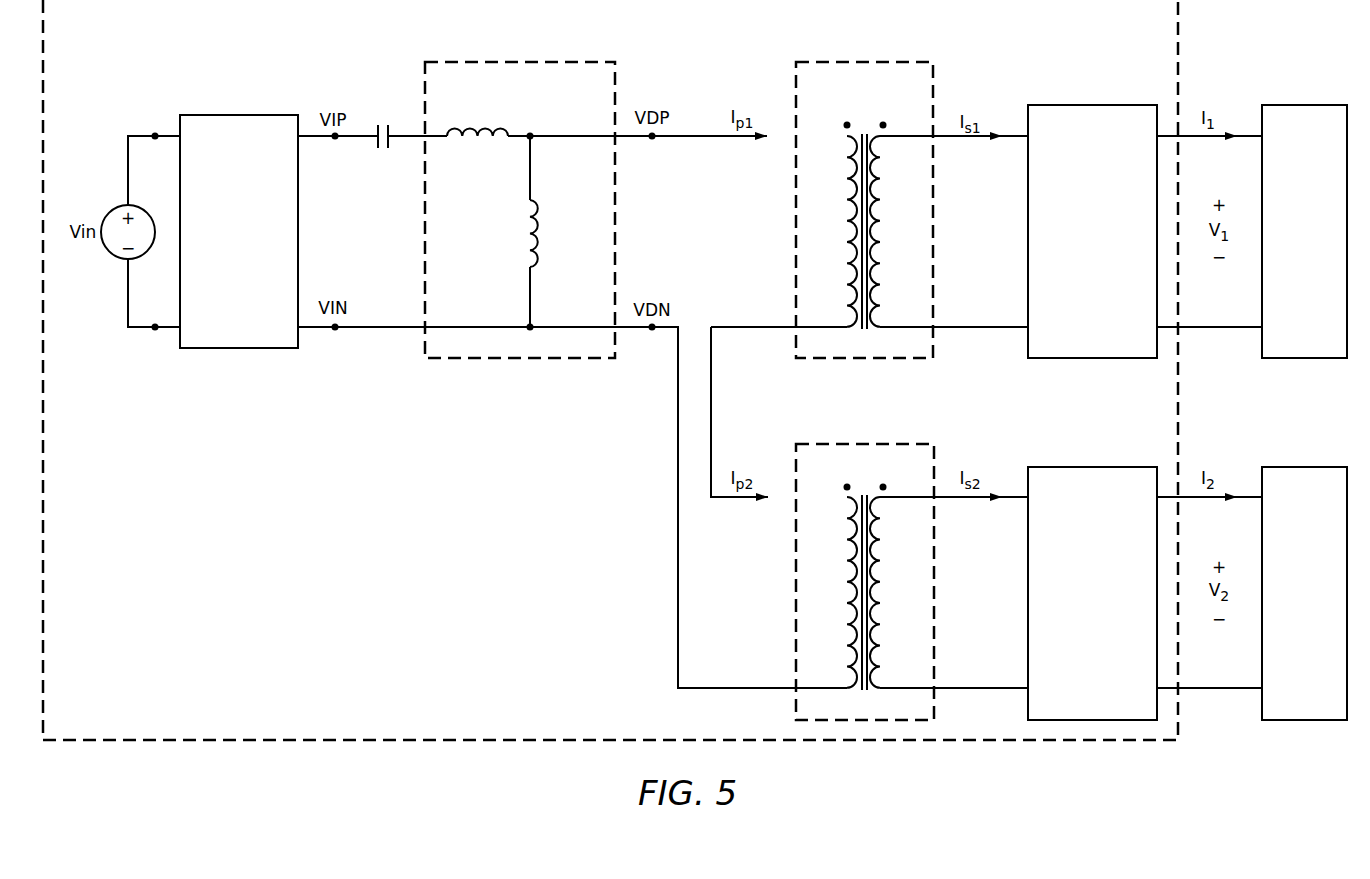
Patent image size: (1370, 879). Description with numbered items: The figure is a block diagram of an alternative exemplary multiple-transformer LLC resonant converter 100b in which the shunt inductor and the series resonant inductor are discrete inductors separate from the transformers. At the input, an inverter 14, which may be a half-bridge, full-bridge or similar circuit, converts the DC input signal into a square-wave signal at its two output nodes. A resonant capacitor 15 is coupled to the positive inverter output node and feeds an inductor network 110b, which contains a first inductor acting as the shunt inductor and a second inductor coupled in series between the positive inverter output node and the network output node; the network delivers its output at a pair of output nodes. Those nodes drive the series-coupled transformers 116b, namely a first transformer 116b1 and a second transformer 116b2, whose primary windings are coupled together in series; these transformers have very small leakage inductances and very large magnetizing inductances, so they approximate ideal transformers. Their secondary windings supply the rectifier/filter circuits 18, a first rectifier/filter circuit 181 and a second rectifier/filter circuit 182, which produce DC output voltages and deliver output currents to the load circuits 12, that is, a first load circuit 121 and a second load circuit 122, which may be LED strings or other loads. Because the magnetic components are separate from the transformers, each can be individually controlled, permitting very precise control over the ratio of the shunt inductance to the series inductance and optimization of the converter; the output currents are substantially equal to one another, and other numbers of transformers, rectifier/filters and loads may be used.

The multiple-transformer LLC resonant converter 100b is at (262, 750).
The inverter 14 is at (240, 113).
The resonant capacitor 15 is at (380, 153).
The inductor network 110b is at (509, 52).
The series-coupled transformers 116b is at (865, 360).
The first transformer 116b1 is at (865, 52).
The second transformer 116b2 is at (865, 434).
The rectifier/filter circuits 18 is at (1092, 384).
The first rectifier/filter circuit 181 is at (1093, 105).
The second rectifier/filter circuit 182 is at (1093, 467).
The load circuits 12 is at (1304, 384).
The first load circuit 121 is at (1305, 105).
The second load circuit 122 is at (1305, 467).